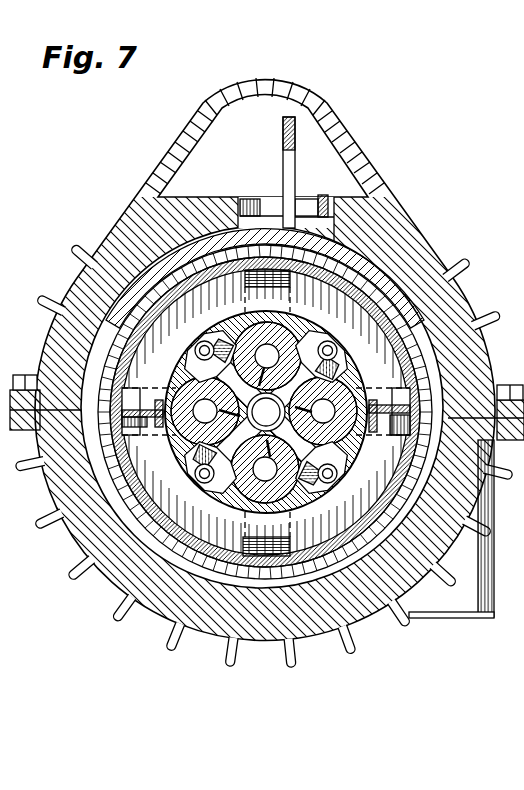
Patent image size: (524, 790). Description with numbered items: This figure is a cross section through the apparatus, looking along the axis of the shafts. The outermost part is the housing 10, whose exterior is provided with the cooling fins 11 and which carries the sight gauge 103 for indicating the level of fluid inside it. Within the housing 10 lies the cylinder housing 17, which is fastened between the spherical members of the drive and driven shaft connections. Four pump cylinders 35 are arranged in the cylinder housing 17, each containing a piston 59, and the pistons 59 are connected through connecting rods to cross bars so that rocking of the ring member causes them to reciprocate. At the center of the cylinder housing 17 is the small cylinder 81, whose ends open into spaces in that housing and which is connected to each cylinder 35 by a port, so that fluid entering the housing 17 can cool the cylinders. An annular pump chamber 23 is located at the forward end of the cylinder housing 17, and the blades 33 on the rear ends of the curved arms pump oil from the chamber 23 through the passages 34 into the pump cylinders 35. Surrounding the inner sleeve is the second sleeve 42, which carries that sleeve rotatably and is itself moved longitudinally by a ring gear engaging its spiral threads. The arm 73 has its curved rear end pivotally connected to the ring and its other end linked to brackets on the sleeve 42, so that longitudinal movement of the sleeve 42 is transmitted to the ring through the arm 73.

The housing 10 is at (432, 246).
The cooling fins 11 is at (117, 619).
The cylinder housing 17 is at (103, 516).
The pump chamber 23 is at (402, 546).
The blades 33 is at (150, 437).
The passages 34 is at (292, 287).
The pump cylinders 35 is at (237, 321).
The second sleeve 42 is at (445, 367).
The piston 59 is at (266, 412).
The arm 73 is at (283, 154).
The small cylinder 81 is at (266, 412).
The sight gauge 103 is at (483, 560).